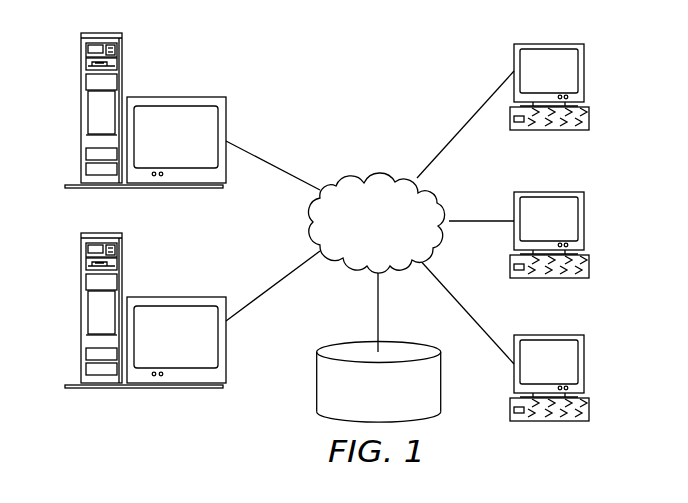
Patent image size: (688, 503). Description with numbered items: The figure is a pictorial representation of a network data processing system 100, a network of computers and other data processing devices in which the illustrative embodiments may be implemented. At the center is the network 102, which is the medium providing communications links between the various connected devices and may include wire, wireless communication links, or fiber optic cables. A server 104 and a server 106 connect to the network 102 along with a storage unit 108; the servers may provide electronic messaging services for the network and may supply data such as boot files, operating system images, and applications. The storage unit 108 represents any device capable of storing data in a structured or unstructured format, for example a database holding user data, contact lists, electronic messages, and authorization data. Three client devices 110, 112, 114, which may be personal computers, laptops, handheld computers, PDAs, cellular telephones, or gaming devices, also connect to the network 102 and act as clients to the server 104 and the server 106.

The network data processing system 100 is at (430, 67).
The network 102 is at (352, 172).
The server 104 is at (82, 112).
The server 106 is at (82, 312).
The storage unit 108 is at (317, 392).
The client device 110 is at (584, 72).
The client device 112 is at (584, 221).
The client device 114 is at (584, 365).